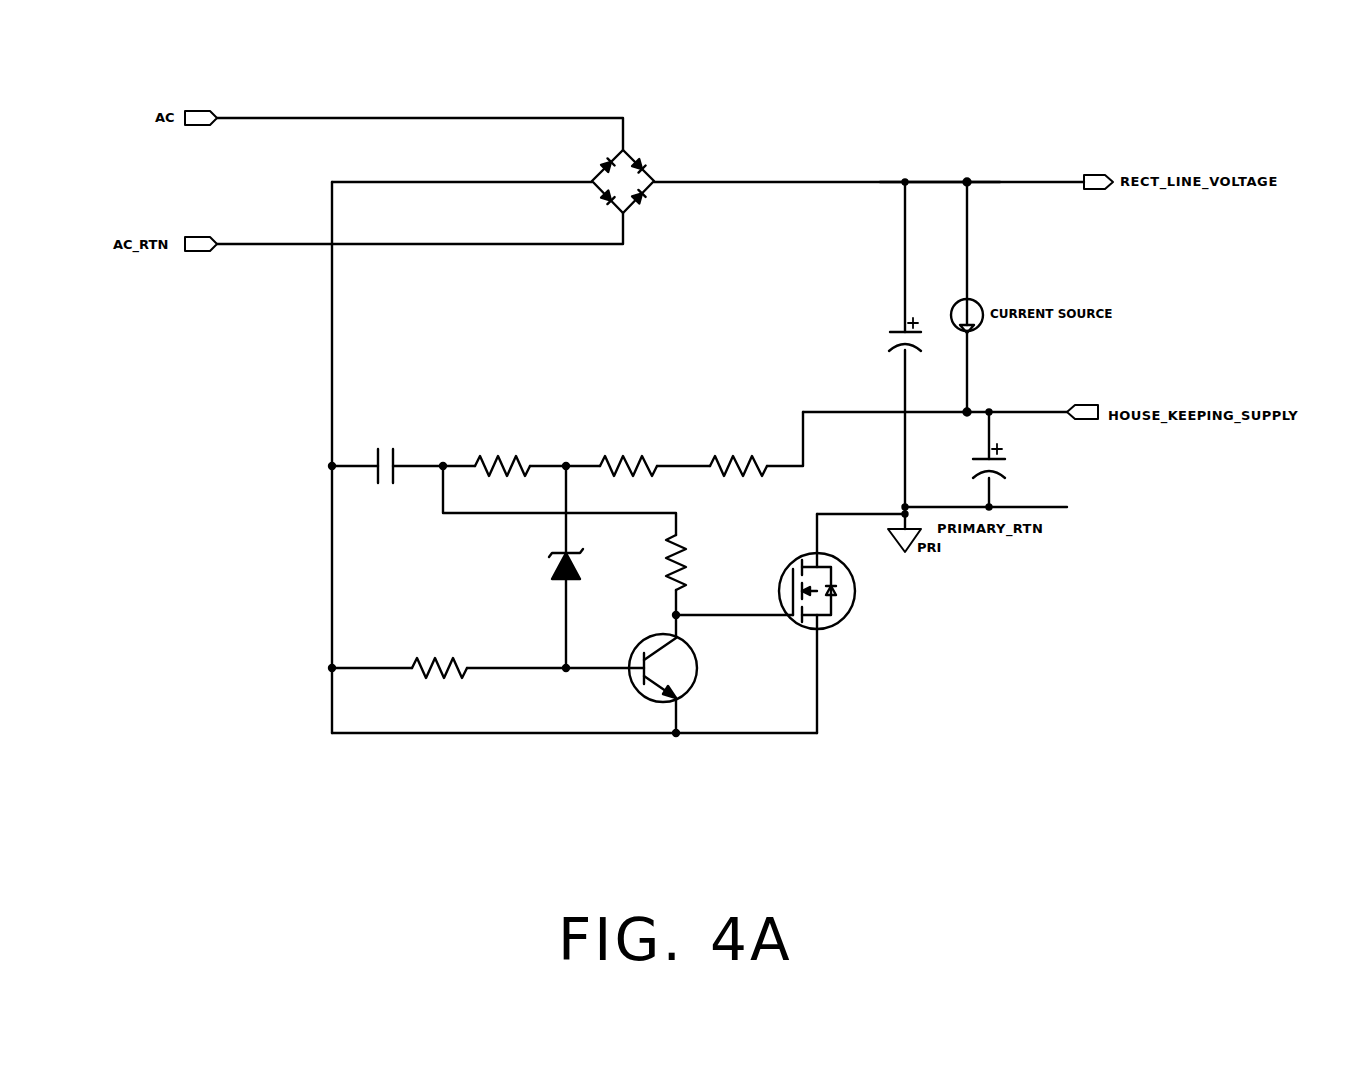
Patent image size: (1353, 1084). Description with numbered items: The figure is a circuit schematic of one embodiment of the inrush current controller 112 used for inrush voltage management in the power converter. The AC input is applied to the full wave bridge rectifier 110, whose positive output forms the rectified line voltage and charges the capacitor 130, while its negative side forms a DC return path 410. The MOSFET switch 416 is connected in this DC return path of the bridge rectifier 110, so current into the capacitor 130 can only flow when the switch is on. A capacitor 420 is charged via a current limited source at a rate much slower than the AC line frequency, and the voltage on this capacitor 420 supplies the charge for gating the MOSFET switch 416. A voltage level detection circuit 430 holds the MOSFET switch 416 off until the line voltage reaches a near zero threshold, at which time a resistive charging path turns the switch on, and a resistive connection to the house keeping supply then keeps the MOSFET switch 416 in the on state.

The full wave bridge rectifier 110 is at (668, 160).
The inrush current controller 112 is at (961, 132).
The capacitor 130 is at (863, 348).
The DC return path 410 is at (267, 457).
The MOSFET switch 416 is at (881, 623).
The capacitor 420 is at (407, 427).
The voltage level detection circuit 430 is at (511, 596).